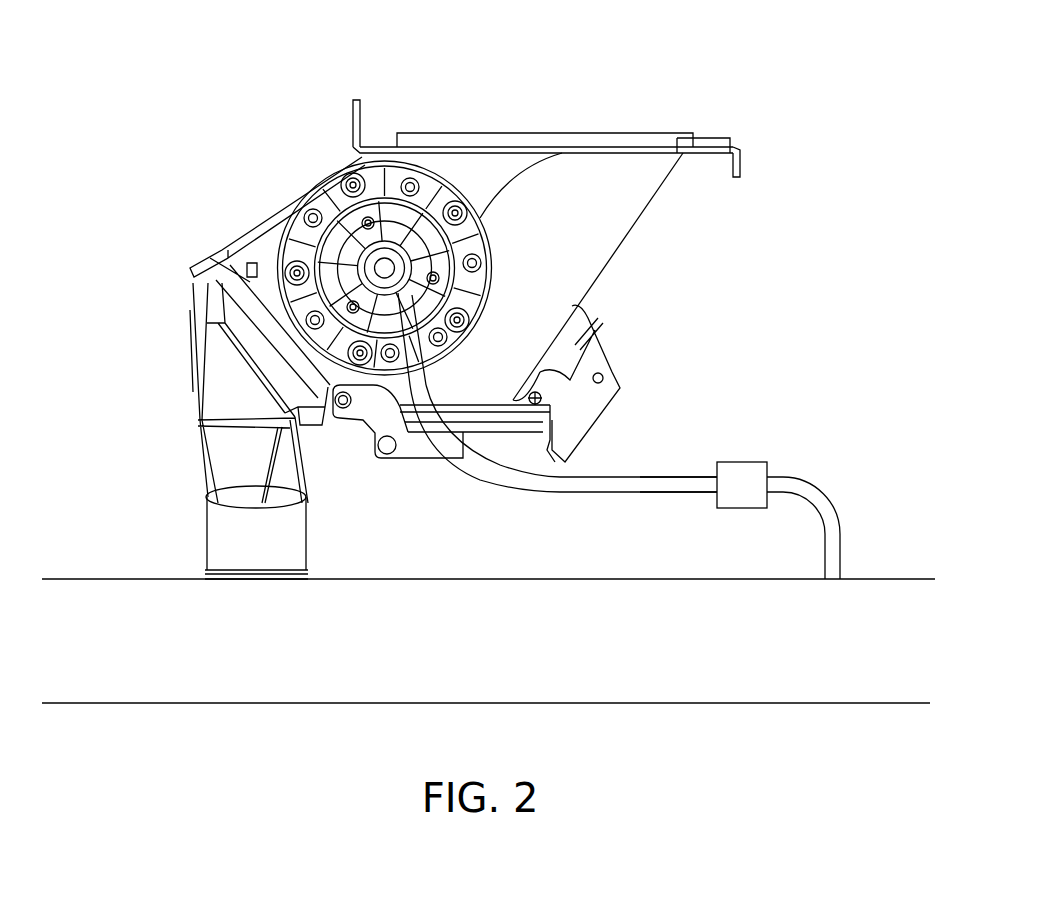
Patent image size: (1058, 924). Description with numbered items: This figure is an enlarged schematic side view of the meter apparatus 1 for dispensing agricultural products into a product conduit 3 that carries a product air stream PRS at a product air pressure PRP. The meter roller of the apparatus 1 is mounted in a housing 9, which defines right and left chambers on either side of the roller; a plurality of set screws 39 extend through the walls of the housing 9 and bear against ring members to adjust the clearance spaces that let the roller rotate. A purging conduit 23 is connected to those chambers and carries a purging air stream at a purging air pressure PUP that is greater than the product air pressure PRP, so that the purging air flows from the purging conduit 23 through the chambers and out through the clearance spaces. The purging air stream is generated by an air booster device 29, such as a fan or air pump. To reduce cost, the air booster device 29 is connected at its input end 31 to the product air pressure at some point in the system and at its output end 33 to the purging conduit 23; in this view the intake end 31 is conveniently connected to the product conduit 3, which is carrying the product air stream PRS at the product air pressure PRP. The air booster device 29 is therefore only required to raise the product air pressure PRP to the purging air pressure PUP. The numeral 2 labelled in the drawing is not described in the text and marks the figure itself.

The meter apparatus 1 is at (498, 368).
The wheel hub / axle 2 is at (439, 292).
The product conduit 3 is at (113, 579).
The housing 9 is at (647, 213).
The purging conduit 23 is at (592, 477).
The air booster device 29 is at (742, 462).
The input end 31 is at (840, 553).
The output end 33 is at (690, 470).
The set screws 39 is at (440, 255).
The purging air pressure PUP is at (650, 488).
The product air pressure PRP is at (860, 625).
The product air stream PRS is at (90, 643).